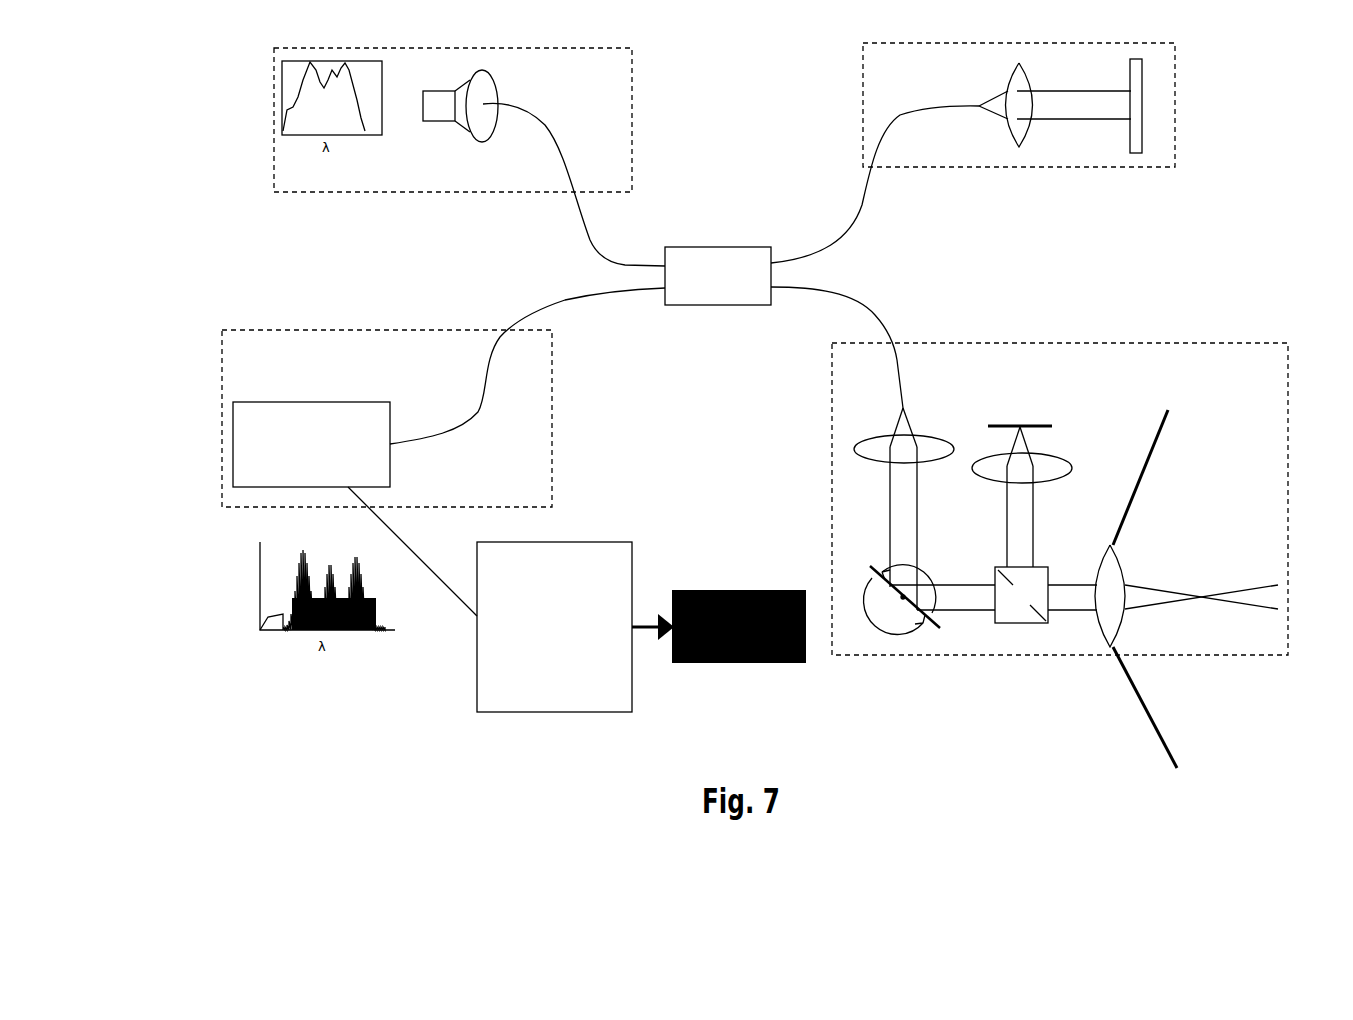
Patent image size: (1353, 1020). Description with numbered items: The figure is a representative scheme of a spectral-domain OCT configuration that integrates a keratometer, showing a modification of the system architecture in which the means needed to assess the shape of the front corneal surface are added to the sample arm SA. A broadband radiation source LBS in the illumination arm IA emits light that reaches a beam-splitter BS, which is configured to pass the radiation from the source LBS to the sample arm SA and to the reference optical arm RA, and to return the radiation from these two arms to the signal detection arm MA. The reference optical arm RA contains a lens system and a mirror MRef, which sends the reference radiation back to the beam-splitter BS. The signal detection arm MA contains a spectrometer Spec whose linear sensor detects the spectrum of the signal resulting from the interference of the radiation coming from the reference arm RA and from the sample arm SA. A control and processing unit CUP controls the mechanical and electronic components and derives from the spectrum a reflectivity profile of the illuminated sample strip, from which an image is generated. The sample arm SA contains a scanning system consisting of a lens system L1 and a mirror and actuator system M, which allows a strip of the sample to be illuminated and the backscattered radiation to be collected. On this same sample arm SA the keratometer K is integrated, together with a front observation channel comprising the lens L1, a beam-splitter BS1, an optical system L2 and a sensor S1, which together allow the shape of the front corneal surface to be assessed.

The illumination arm IA is at (453, 136).
The broadband radiation source LBS is at (451, 104).
The reference optical arm RA is at (1002, 105).
The mirror MRef is at (1109, 106).
The beam-splitter BS is at (718, 276).
The signal detection arm MA is at (387, 405).
The spectrometer Spec is at (311, 444).
The control and processing unit CUP is at (554, 627).
The sample arm SA is at (1060, 515).
The mirror and actuator system M is at (913, 605).
The sensor S1 is at (1020, 414).
The optical system L2 is at (1037, 468).
The beam-splitter BS1 is at (1021, 595).
The lens system L1 is at (1110, 579).
The keratometer K is at (1150, 592).